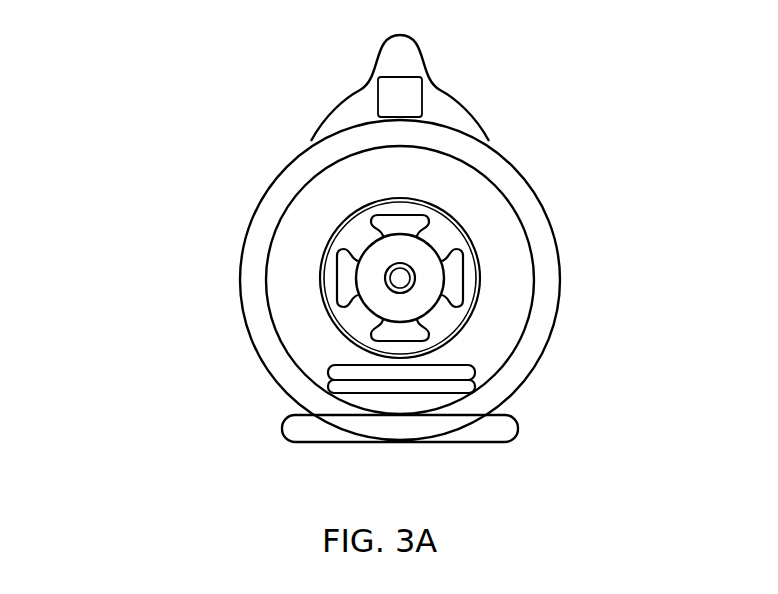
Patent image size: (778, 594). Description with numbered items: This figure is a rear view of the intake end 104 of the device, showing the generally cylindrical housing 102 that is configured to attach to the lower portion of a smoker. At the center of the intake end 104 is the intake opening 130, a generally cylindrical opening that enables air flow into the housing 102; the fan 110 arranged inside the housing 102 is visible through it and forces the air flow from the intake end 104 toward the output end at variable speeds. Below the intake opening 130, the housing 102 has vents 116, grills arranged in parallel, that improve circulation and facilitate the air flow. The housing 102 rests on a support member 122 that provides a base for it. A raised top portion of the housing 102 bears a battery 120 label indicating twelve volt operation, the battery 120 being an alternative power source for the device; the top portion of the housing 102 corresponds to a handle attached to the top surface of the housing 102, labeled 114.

The housing 102 is at (286, 167).
The intake end 104 is at (178, 278).
The fan 110 is at (455, 298).
The housing top portion 114 is at (366, 93).
The vents 116 is at (477, 374).
The battery 120 is at (422, 92).
The support member 122 is at (283, 430).
The intake opening 130 is at (443, 235).